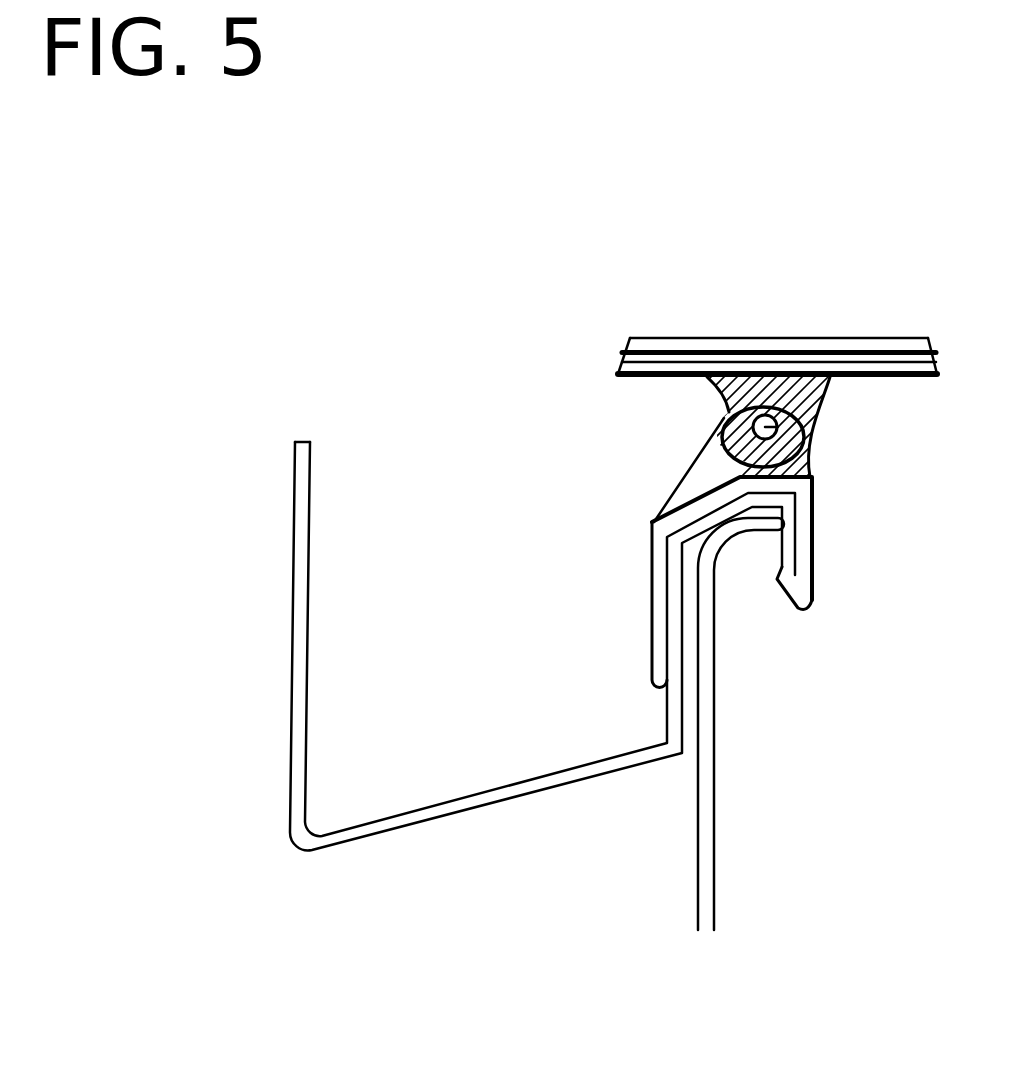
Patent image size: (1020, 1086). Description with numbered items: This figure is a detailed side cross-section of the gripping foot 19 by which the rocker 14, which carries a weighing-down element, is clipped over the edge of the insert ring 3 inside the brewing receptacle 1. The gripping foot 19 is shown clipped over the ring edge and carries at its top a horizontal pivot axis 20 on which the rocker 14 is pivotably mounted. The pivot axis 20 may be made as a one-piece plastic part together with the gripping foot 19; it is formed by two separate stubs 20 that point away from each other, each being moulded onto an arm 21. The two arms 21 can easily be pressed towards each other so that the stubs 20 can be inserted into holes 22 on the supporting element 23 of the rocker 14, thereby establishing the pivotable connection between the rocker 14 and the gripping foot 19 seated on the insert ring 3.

The brewing receptacle 1 is at (707, 846).
The insert ring 3 is at (493, 797).
The rocker 14 is at (790, 352).
The gripping foot 19 is at (795, 577).
The pivot axis 20 is at (808, 440).
The arm 21 is at (707, 472).
The hole 22 is at (722, 410).
The supporting element 23 is at (808, 400).